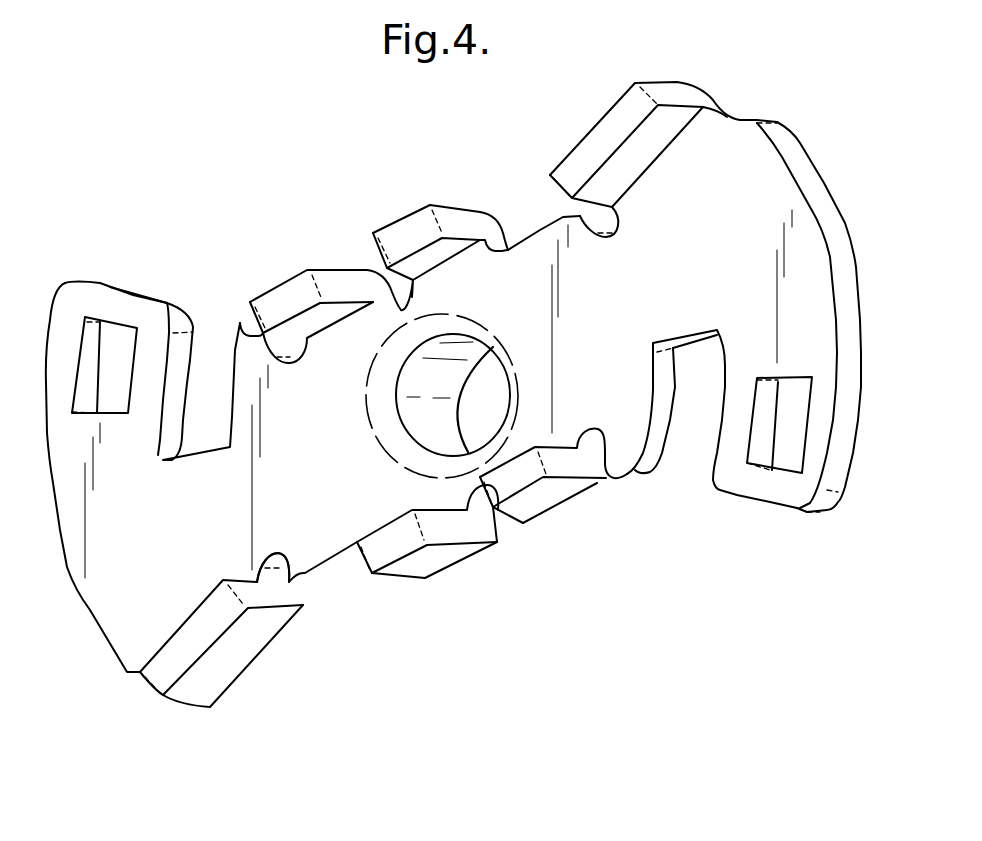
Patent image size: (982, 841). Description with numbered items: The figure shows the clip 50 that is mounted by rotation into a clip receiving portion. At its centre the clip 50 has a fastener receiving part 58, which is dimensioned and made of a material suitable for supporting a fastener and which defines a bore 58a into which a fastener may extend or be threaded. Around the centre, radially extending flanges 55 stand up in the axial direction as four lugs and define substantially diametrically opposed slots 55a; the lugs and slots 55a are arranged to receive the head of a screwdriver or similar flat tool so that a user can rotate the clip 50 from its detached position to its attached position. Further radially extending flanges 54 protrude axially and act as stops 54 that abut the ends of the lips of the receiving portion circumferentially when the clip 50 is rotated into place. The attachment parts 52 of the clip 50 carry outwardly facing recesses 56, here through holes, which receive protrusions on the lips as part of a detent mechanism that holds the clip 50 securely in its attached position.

The clip 50 is at (241, 332).
The attachment part 52 is at (118, 555).
The radially extending flange (stop) 54 is at (613, 137).
The radially extending flange (lug) 55 is at (282, 302).
The slot 55a is at (337, 241).
The recess 56 is at (117, 350).
The fastener receiving part 58 is at (369, 463).
The bore 58a is at (483, 407).